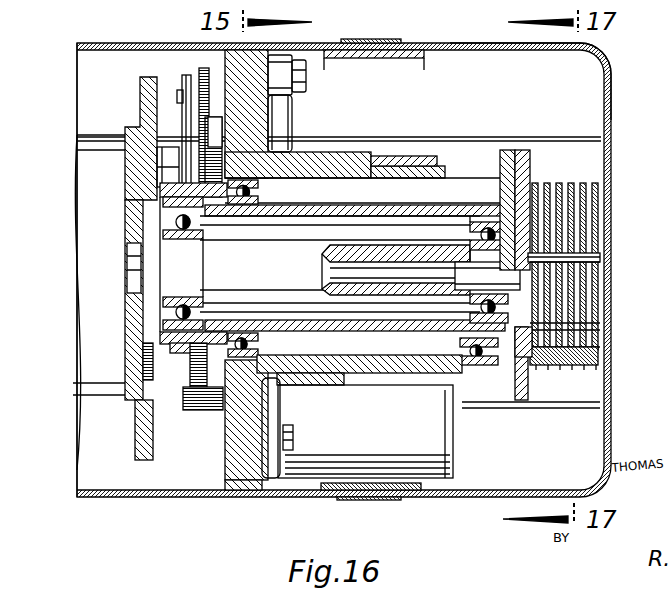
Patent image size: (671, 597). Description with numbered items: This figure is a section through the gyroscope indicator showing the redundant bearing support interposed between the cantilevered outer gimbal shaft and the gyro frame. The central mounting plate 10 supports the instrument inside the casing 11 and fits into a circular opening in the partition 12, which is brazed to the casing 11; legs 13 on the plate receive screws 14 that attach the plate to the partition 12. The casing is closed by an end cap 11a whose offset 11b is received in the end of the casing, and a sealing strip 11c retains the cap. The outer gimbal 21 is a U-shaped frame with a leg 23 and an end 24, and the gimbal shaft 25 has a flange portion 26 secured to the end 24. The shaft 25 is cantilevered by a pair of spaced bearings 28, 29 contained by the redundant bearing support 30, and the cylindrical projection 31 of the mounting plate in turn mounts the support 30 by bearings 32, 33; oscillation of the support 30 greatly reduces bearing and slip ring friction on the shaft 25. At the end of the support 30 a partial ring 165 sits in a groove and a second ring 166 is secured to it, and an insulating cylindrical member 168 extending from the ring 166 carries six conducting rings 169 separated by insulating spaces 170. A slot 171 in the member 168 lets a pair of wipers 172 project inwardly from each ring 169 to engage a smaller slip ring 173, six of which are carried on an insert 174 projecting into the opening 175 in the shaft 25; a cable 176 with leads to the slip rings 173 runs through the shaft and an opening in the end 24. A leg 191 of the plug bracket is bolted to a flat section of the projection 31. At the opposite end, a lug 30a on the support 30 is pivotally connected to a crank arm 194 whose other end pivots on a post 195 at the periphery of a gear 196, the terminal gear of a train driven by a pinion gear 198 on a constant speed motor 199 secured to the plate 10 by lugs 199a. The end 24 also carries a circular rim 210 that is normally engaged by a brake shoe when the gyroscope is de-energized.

The central mounting plate 10 is at (240, 470).
The casing 11 is at (139, 43).
The end cap 11a is at (458, 43).
The offset 11b is at (396, 52).
The sealing strip 11c is at (380, 40).
The partition 12 is at (243, 490).
The legs 13 is at (292, 118).
The screws 14 is at (306, 76).
The outer gimbal 21 is at (106, 150).
The leg 23 is at (126, 194).
The end 24 is at (124, 330).
The gimbal shaft 25 is at (262, 257).
The flange portion 26 is at (153, 372).
The bearing 28 is at (200, 263).
The bearing 29 is at (446, 233).
The redundant bearing support 30 is at (372, 206).
The lug 30a is at (140, 137).
The cylindrical projection 31 is at (308, 160).
The bearing 32 is at (262, 268).
The bearing 33 is at (467, 221).
The partial ring 165 is at (508, 152).
The second ring 166 is at (522, 152).
The insulating cylindrical member 168 is at (602, 197).
The conducting rings 169 is at (560, 365).
The insulating spaces 170 is at (530, 400).
The slot 171 is at (586, 340).
The wipers 172 is at (586, 303).
The slip ring 173 is at (600, 260).
The insert 174 is at (487, 276).
The opening 175 is at (367, 262).
The cable 176 is at (392, 270).
The leg 191 is at (398, 160).
The crank arm 194 is at (210, 128).
The post 195 is at (193, 82).
The gear 196 is at (212, 100).
The pinion gear 198 is at (200, 410).
The constant speed motor 199 is at (446, 445).
The lugs 199a is at (284, 462).
The circular rim 210 is at (135, 455).